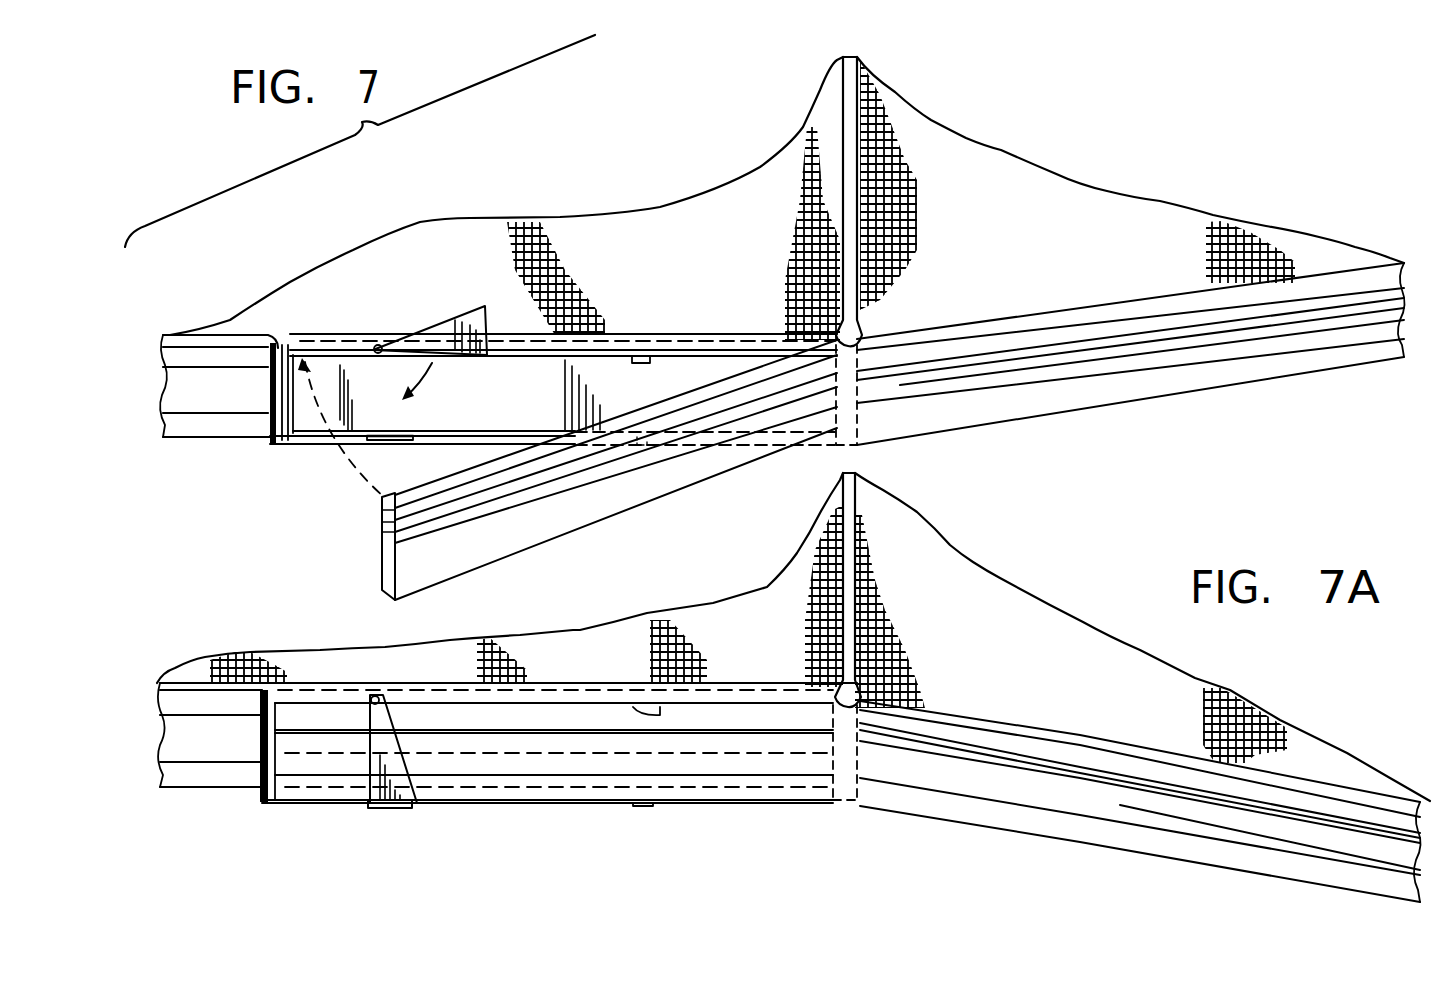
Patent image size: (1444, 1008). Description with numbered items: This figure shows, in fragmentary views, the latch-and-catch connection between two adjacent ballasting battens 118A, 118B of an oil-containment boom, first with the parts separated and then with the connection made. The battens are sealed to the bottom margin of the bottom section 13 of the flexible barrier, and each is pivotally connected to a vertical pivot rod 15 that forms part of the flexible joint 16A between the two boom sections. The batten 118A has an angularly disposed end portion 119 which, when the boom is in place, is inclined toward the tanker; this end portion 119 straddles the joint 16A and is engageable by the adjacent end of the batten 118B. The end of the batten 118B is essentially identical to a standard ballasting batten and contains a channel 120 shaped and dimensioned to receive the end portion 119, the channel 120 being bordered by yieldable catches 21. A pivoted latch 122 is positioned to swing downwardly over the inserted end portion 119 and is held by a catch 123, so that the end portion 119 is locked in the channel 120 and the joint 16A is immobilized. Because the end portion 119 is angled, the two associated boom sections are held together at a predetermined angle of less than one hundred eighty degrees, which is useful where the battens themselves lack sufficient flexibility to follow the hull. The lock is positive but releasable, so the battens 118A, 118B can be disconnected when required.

In FIG. 7, the bottom section 13 is at (605, 230).
In FIG. 7A, the bottom section 13 is at (637, 637).
In FIG. 7, the pivot rod 15 is at (847, 222).
In FIG. 7A, the pivot rod 15 is at (843, 480).
In FIG. 7, the joint 16A is at (880, 447).
In FIG. 7A, the joint 16A is at (867, 797).
In FIG. 7, the yieldable catches 21 is at (640, 338).
In FIG. 7A, the yieldable catches 21 is at (680, 707).
In FIG. 7, the ballasting batten 118A is at (1257, 367).
In FIG. 7A, the ballasting batten 118A is at (1043, 823).
In FIG. 7, the ballasting batten 118B is at (185, 427).
In FIG. 7A, the ballasting batten 118B is at (197, 773).
In FIG. 7, the angularly disposed end portion 119 is at (443, 537).
In FIG. 7, the channel 120 is at (510, 405).
In FIG. 7A, the channel 120 is at (547, 746).
In FIG. 7, the latch 122 is at (425, 340).
In FIG. 7A, the latch 122 is at (390, 765).
In FIG. 7, the catch 123 is at (382, 453).
In FIG. 7A, the catch 123 is at (403, 808).